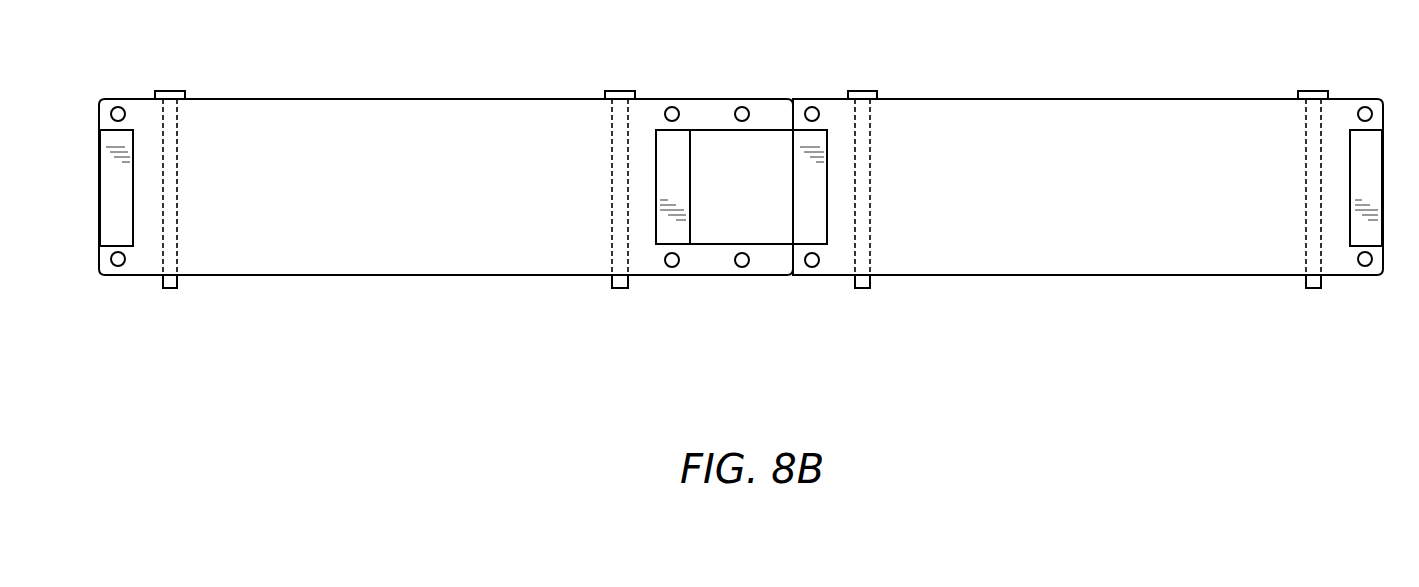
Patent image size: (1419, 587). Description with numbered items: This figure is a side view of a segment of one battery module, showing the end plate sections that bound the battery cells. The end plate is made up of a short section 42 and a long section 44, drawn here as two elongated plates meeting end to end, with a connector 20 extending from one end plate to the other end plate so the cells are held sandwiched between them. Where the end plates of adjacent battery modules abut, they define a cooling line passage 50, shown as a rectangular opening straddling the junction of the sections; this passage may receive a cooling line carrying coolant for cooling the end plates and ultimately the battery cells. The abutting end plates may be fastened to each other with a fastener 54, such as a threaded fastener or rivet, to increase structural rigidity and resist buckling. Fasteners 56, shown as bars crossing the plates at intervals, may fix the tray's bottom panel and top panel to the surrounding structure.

The connector 20 is at (118, 107).
The short section 42 is at (1092, 98).
The long section 44 is at (392, 98).
The cooling line passage 50 is at (758, 212).
The fastener 54 is at (740, 107).
The fasteners 56 is at (177, 227).